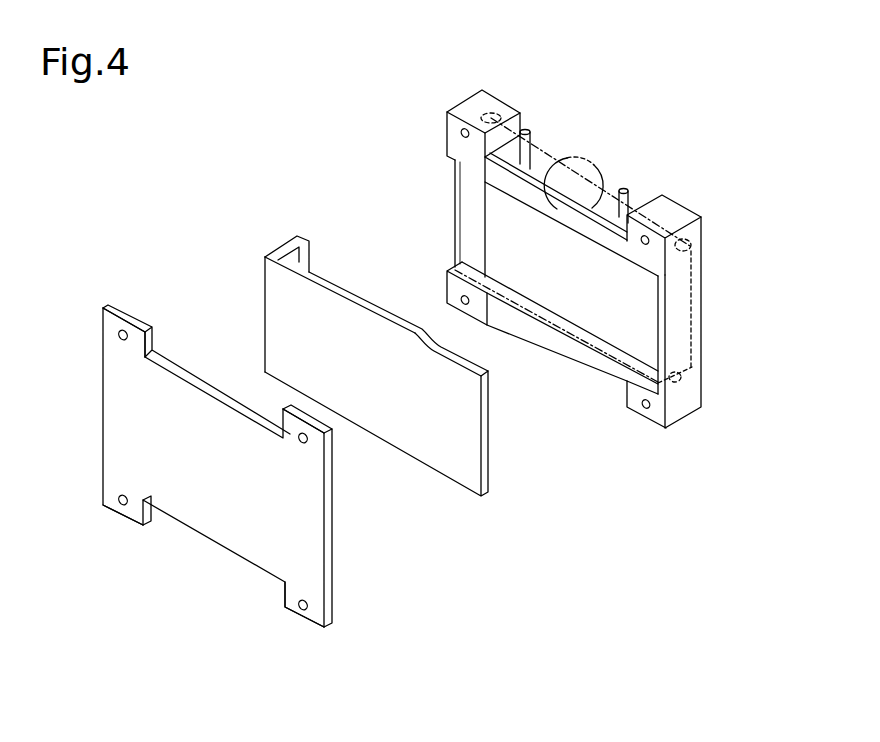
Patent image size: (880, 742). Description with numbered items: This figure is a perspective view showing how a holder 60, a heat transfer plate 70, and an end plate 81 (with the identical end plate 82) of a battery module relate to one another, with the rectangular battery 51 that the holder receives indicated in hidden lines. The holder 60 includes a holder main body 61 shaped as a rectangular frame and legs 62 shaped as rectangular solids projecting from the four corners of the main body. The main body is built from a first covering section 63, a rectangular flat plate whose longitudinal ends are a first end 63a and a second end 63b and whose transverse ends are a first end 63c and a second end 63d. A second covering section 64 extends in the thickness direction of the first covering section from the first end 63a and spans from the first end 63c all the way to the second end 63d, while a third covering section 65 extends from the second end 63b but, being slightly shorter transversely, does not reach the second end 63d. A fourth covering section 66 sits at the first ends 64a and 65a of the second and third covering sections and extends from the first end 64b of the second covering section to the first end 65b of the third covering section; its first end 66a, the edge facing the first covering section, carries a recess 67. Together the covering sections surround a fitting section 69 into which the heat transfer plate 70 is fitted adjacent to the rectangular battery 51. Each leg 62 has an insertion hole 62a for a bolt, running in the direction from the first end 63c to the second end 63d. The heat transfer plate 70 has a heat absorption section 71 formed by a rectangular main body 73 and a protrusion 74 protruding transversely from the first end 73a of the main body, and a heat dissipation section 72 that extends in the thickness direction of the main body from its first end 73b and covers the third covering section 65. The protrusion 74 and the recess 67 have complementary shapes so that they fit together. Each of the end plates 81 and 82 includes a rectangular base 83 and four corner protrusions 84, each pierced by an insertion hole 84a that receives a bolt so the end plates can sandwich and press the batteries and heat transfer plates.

The rectangular battery 51 is at (590, 150).
The holder 60 is at (579, 257).
The holder main body 61 is at (704, 300).
The leg 62 is at (447, 113).
The insertion hole 62a is at (461, 134).
The first covering section 63 is at (556, 317).
The first end in the longitudinal direction of the first covering section 63a is at (692, 384).
The second end in the longitudinal direction of the first covering section 63b is at (486, 258).
The first end in the transverse direction of the first covering section 63c is at (548, 286).
The second end in the transverse direction of the first covering section 63d is at (513, 318).
The second covering section 64 is at (688, 334).
The first end in the longitudinal direction of the second covering section 64a is at (692, 245).
The first end in the transverse direction of the second covering section 64b is at (657, 317).
The third covering section 65 is at (455, 175).
The first end in the longitudinal direction of the third covering section 65a is at (503, 104).
The first end in the transverse direction of the third covering section 65b is at (460, 215).
The fourth covering section 66 is at (572, 197).
The first end in the transverse direction of the fourth covering section 66a is at (503, 183).
The recess 67 is at (536, 166).
The fitting section 69 is at (598, 192).
The heat transfer plate 70 is at (347, 336).
The heat absorption section 71 is at (376, 287).
The heat dissipation section 72 is at (305, 243).
The main body 73 is at (341, 305).
The first end in the transverse direction of the main body 73a is at (460, 356).
The first end in the longitudinal direction of the main body 73b is at (265, 285).
The protrusion 74 is at (377, 304).
The end plate 81 is at (210, 410).
The end plate 82 is at (210, 410).
The base 83 is at (213, 507).
The protrusion 84 is at (113, 320).
The insertion hole 84a is at (118, 334).